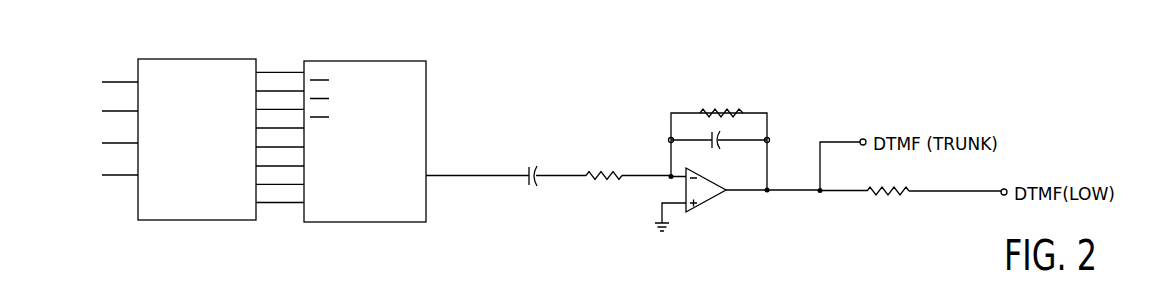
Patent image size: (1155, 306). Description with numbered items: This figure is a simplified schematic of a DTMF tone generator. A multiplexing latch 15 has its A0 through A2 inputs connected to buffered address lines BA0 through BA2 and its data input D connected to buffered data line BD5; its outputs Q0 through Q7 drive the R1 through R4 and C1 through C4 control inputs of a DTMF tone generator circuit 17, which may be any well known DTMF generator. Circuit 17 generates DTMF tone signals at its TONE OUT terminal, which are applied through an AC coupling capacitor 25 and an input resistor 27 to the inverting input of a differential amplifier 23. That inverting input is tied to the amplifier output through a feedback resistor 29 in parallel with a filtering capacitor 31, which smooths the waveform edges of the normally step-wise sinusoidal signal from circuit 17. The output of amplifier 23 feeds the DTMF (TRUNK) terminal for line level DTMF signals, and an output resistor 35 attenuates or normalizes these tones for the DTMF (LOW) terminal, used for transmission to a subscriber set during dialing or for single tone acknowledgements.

The multiplexing latch 15 is at (167, 59).
The DTMF tone generator circuit 17 is at (333, 61).
The differential amplifier 23 is at (714, 196).
The AC coupling capacitor 25 is at (528, 167).
The input resistor 27 is at (600, 172).
The feedback resistor 29 is at (710, 112).
The filtering capacitor 31 is at (722, 142).
The output resistor 35 is at (897, 198).